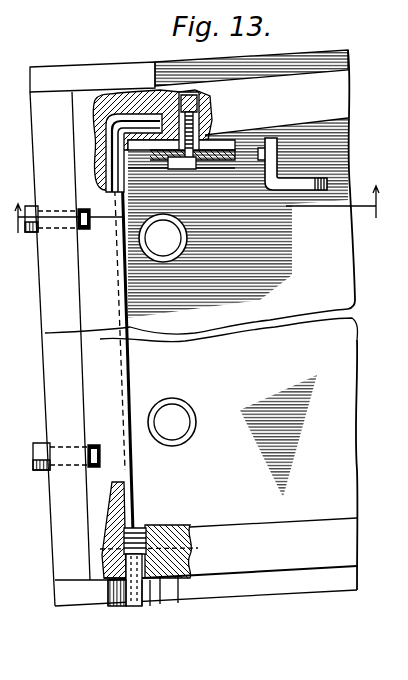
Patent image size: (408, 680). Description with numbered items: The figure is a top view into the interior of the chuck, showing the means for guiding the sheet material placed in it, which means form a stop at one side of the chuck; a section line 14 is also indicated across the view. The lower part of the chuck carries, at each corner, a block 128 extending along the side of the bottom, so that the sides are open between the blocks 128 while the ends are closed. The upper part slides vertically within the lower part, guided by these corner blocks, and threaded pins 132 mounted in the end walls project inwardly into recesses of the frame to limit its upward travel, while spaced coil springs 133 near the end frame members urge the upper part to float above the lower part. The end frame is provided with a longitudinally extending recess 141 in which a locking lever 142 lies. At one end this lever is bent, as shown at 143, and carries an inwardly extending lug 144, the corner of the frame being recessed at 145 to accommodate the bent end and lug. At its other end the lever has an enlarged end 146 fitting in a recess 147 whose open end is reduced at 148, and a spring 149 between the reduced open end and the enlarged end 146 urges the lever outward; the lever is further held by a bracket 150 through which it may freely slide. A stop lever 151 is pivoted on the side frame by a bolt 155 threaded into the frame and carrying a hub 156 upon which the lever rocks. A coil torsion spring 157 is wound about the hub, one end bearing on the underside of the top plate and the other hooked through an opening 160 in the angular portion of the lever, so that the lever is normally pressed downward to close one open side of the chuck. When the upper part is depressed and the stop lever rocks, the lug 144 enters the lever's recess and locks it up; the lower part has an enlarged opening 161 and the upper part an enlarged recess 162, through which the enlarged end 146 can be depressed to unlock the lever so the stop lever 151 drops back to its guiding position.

The section line 14- 14 is at (196, 201).
The block 128 is at (88, 598).
The threaded pin 132 is at (36, 234).
The coil spring 133 is at (197, 420).
The longitudinally extending recess 141 is at (140, 486).
The locking lever 142 is at (144, 510).
The bent end of locking lever 143 is at (103, 92).
The lug 144 is at (143, 92).
The corner recess 145 is at (97, 141).
The enlarged end of locking lever 146 is at (136, 584).
The recess 147 is at (188, 549).
The reduced open end 148 is at (150, 527).
The spring 149 is at (106, 549).
The bracket 150 is at (98, 174).
The stop lever 151 is at (172, 152).
The bolt 155 is at (200, 170).
The hub 156 is at (226, 152).
The coil torsion spring 157 is at (196, 132).
The opening 160 is at (275, 138).
The enlarged opening 161 is at (152, 592).
The enlarged recess 162 is at (122, 584).